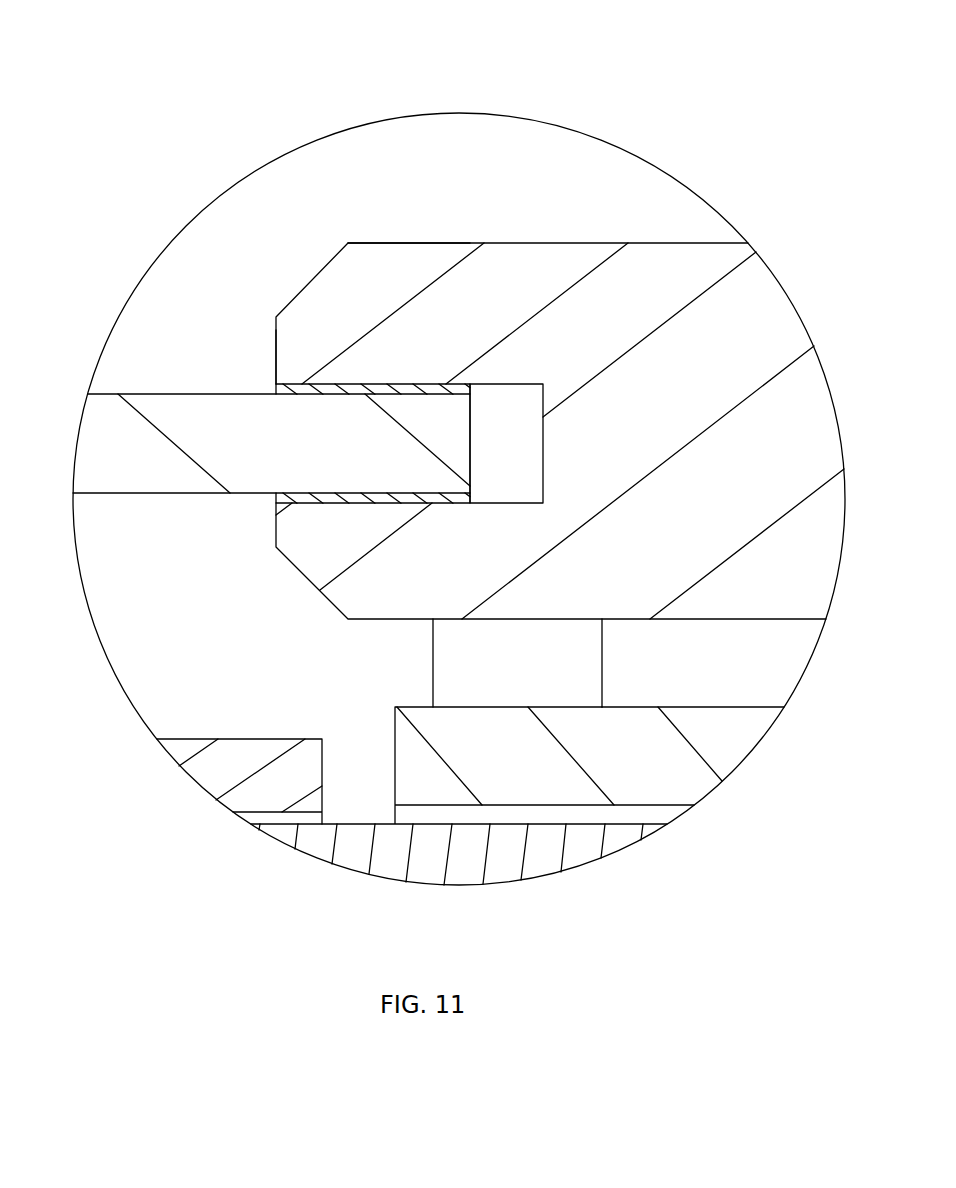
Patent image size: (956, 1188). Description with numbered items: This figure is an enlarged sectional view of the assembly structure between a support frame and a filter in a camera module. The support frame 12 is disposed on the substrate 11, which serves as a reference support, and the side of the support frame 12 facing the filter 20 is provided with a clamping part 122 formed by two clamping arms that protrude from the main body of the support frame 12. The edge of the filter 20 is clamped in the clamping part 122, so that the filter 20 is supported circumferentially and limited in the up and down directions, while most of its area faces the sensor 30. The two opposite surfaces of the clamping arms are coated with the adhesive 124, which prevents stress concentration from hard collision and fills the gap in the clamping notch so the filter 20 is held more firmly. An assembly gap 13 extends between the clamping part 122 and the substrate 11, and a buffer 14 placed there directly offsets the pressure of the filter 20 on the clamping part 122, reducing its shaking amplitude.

The substrate 11 is at (630, 770).
The support frame 12 is at (602, 237).
The clamping part 122 is at (472, 305).
The adhesive 124 is at (290, 388).
The assembly gap 13 is at (737, 653).
The buffer 14 is at (489, 672).
The filter 20 is at (108, 467).
The sensor 30 is at (223, 778).